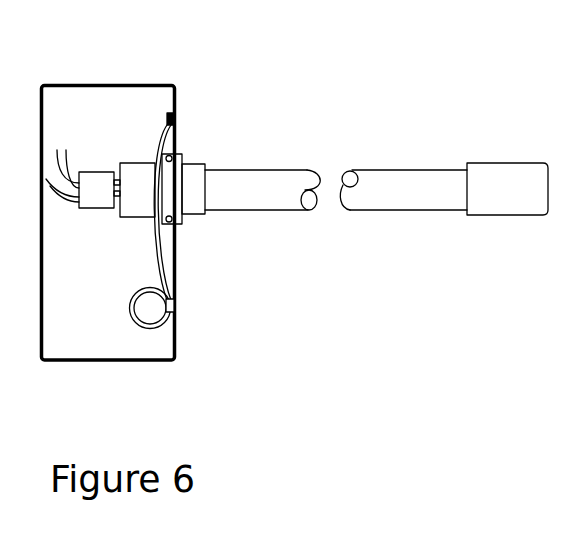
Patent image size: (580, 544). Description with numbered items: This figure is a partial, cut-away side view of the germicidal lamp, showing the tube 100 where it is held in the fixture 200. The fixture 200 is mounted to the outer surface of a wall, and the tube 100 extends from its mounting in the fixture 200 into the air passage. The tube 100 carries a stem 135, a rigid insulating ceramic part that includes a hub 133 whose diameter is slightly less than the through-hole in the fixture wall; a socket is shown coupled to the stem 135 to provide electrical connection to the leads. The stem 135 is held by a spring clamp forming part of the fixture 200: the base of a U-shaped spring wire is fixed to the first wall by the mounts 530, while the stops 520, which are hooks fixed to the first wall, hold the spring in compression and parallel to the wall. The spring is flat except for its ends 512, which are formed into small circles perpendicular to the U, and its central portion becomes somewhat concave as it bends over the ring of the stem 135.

The tube 100 is at (307, 170).
The hub 133 is at (207, 217).
The stem 135 is at (197, 165).
The fixture 200 is at (98, 362).
The ends 512 is at (165, 327).
The stops 520 is at (170, 302).
The mounts 530 is at (173, 117).